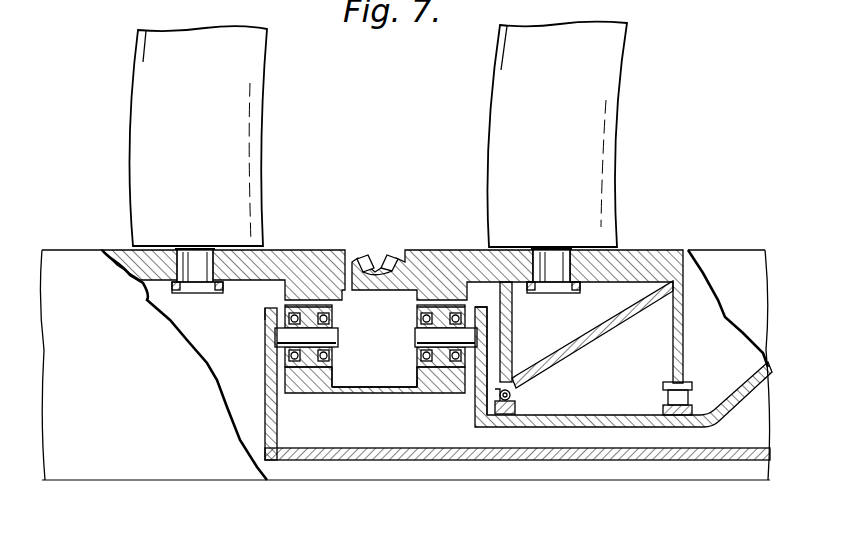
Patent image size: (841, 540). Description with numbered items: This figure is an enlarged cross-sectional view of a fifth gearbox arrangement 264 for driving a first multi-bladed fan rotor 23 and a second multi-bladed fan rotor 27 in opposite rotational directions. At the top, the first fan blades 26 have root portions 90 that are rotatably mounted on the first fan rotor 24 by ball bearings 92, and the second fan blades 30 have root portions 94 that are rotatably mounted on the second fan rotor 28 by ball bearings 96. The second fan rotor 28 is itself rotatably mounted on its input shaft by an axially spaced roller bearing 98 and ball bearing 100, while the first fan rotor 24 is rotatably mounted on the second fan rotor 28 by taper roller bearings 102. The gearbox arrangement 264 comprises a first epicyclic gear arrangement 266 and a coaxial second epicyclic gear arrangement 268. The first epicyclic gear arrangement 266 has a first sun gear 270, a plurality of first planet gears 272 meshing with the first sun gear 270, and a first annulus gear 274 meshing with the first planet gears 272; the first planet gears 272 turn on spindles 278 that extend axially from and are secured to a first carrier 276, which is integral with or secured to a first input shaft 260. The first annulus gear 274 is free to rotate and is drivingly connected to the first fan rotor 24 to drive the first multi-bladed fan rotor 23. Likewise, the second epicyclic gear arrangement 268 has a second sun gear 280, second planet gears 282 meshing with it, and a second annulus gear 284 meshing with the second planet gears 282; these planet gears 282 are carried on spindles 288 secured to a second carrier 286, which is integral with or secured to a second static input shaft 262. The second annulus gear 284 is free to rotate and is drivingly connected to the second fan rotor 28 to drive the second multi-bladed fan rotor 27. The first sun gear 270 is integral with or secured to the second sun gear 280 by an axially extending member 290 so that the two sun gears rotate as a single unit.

The first multi-bladed fan rotor 23 is at (122, 157).
The first fan rotor 24 is at (137, 262).
The first fan blades 26 is at (152, 68).
The second multi-bladed fan rotor 27 is at (485, 156).
The second fan rotor 28 is at (485, 265).
The second fan blades 30 is at (500, 68).
The root portions 90 is at (196, 281).
The ball bearings 92 is at (173, 288).
The root portions 94 is at (570, 248).
The ball bearings 96 is at (618, 272).
The roller bearing 98 is at (686, 400).
The ball bearing 100 is at (514, 394).
The taper roller bearings 102 is at (383, 267).
The first input shaft 260 is at (740, 452).
The second static input shaft 262 is at (700, 416).
The gearbox arrangement 264 is at (213, 397).
The first epicyclic gear arrangement 266 is at (337, 370).
The second epicyclic gear arrangement 268 is at (412, 370).
The first sun gear 270 is at (287, 388).
The first planet gears 272 is at (305, 303).
The first annulus gear 274 is at (292, 300).
The first carrier 276 is at (267, 336).
The spindles 278 is at (267, 352).
The second sun gear 280 is at (447, 385).
The second planet gears 282 is at (443, 300).
The second annulus gear 284 is at (427, 302).
The second carrier 286 is at (488, 327).
The spindles 288 is at (478, 342).
The axially extending member 290 is at (382, 392).